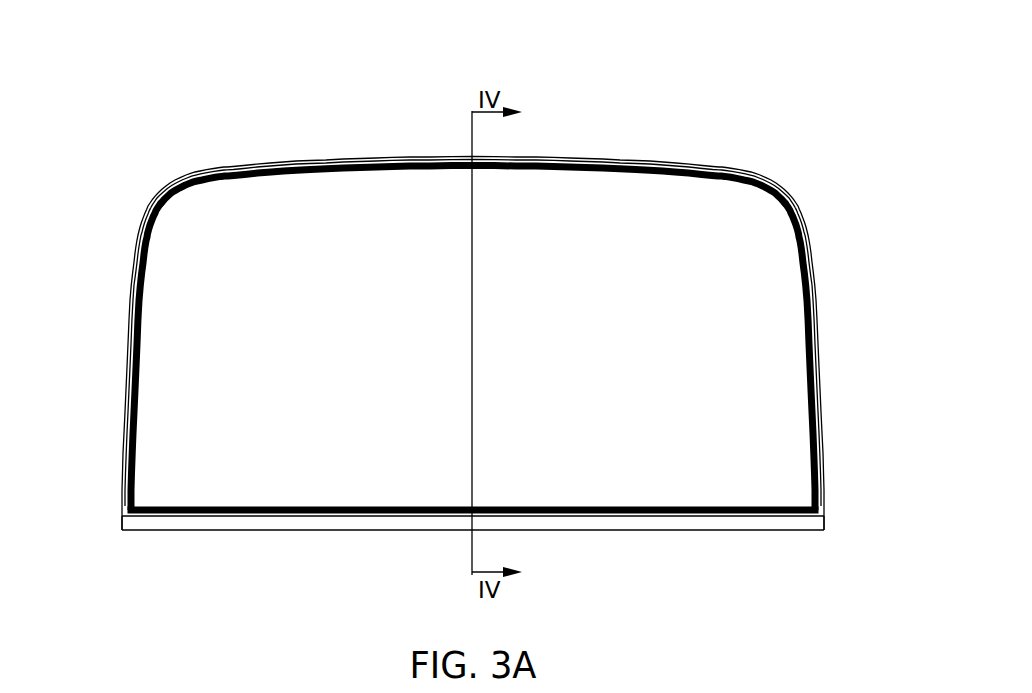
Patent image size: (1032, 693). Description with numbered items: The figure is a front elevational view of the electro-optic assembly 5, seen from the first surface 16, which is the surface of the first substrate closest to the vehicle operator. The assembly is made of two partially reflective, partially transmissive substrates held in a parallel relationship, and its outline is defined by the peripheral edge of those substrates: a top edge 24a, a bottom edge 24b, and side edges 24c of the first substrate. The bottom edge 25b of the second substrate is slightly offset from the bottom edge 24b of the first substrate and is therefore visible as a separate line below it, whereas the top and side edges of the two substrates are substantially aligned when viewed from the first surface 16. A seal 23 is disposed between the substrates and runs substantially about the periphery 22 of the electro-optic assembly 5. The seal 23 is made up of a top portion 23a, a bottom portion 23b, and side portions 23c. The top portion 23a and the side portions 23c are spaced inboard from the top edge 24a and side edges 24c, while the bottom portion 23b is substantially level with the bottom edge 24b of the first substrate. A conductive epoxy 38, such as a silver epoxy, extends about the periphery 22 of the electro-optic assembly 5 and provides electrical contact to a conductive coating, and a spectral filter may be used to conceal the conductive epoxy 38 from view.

The electro-optic assembly 5 is at (780, 30).
The first surface 16 is at (620, 240).
The periphery 22 is at (459, 137).
The seal 23 is at (473, 297).
The top portion 23a is at (578, 165).
The bottom portion 23b is at (572, 507).
The side portions 23c is at (129, 429).
The top edge 24a is at (290, 162).
The bottom edge 24b is at (553, 516).
The side edges 24c is at (130, 302).
The bottom edge 25b is at (295, 531).
The conductive epoxy 38 is at (535, 158).